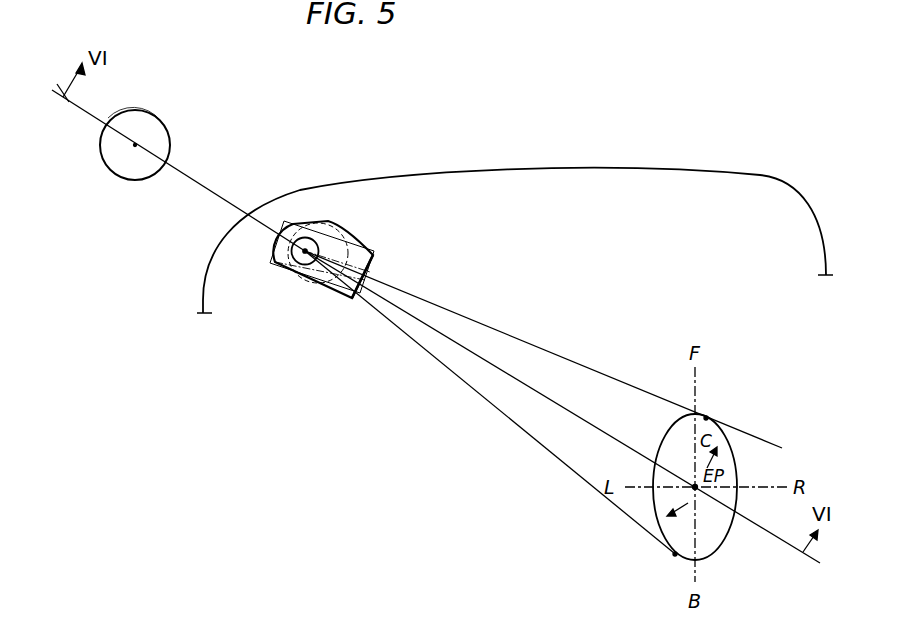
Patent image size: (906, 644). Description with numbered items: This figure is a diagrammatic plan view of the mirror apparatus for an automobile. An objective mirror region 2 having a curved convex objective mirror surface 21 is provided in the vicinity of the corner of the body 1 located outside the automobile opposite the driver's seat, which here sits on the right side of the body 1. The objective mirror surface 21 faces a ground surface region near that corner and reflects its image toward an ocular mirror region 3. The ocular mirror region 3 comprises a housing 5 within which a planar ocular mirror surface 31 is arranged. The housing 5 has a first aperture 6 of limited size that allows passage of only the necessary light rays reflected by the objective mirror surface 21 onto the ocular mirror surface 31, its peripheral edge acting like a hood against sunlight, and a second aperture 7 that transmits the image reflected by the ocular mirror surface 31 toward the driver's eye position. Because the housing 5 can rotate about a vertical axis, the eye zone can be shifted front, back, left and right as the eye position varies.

The body 1 is at (609, 168).
The objective mirror region 2 is at (143, 110).
The objective mirror surface 21 is at (153, 127).
The ocular mirror region 3 is at (330, 224).
The ocular mirror surface 31 is at (334, 238).
The housing 5 is at (336, 297).
The first aperture 6 is at (304, 247).
The second aperture 7 is at (364, 298).